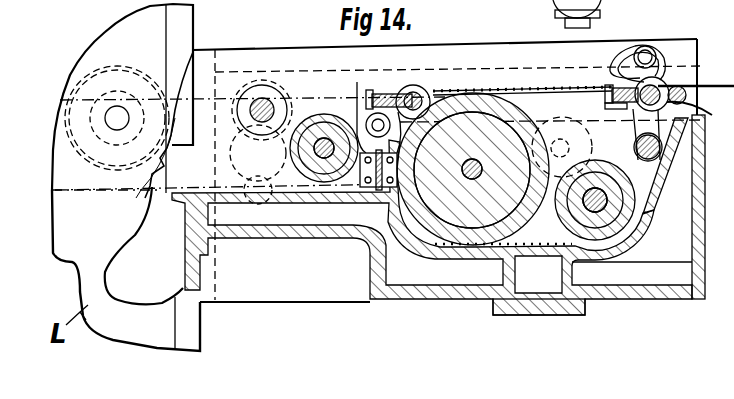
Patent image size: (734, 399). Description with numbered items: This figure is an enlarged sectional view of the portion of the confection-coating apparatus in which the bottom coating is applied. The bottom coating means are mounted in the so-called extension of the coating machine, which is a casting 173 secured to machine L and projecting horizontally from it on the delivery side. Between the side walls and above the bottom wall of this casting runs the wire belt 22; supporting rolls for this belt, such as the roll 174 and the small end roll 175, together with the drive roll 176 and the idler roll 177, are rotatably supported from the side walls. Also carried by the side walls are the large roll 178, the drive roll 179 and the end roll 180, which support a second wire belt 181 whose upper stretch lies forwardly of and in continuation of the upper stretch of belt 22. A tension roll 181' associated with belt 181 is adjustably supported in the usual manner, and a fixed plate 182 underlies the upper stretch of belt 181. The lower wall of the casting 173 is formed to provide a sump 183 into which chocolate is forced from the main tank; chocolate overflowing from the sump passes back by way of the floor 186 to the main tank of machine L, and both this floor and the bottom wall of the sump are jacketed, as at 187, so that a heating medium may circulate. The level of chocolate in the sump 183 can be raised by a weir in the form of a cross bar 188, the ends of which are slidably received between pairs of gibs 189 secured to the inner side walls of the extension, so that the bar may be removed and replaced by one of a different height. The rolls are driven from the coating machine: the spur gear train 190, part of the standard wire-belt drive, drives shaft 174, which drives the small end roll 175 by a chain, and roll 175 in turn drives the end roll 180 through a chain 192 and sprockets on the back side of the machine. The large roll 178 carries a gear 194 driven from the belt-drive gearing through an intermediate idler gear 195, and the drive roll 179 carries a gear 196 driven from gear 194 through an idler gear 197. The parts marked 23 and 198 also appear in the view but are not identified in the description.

The wire belt 22 is at (244, 98).
The spring 23 is at (714, 114).
The casting 173 is at (264, 303).
The supporting roll 174 is at (272, 96).
The small end roll 175 is at (415, 92).
The drive roll 176 is at (328, 120).
The idler roll 177 is at (373, 110).
The large roll 178 is at (446, 247).
The drive roll 179 is at (622, 223).
The end roll 180 is at (665, 75).
The second wire belt 181 is at (575, 103).
The tension roll 181' is at (680, 109).
The fixed plate 182 is at (611, 80).
The sump 183 is at (580, 256).
The floor 186 is at (277, 226).
The jacket 187 is at (394, 300).
The cross bar 188 is at (368, 200).
The gibs 189 is at (353, 256).
The spur gear train 190 is at (128, 193).
The chain 192 is at (558, 76).
The gear 194 is at (463, 299).
The intermediate idler gear 195 is at (371, 256).
The gear 196 is at (628, 224).
The idler gear 197 is at (562, 136).
The gear 198 is at (234, 152).